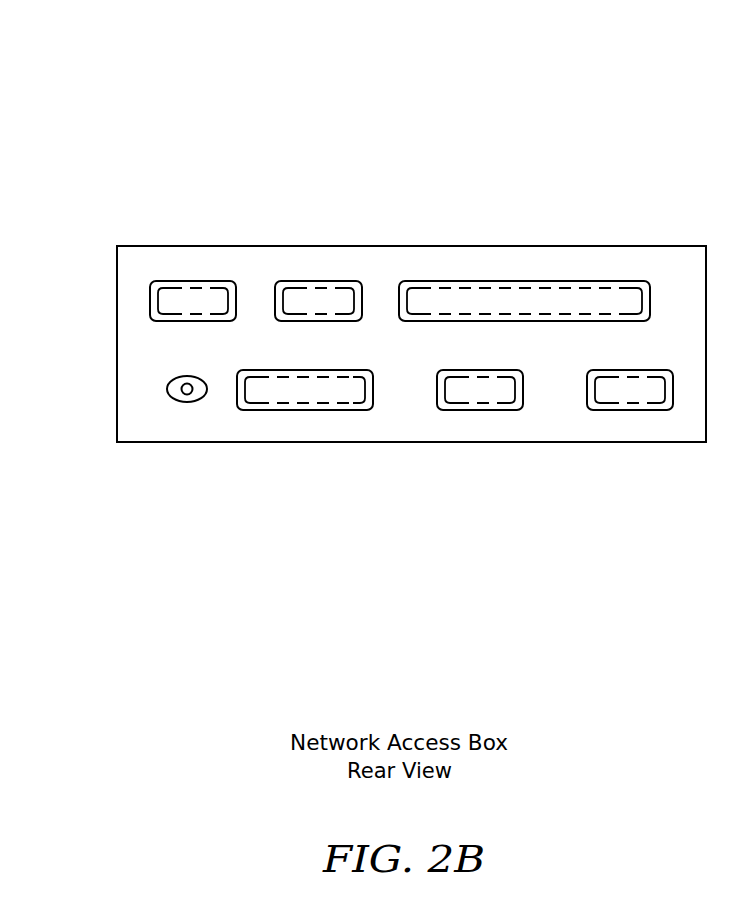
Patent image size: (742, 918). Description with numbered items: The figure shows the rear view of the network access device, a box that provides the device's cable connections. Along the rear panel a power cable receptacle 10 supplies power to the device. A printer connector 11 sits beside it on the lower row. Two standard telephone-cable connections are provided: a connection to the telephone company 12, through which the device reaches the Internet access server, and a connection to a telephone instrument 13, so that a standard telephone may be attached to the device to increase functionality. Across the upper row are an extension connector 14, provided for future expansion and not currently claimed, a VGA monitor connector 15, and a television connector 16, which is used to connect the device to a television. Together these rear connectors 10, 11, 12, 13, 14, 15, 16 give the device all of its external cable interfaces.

The Power Cable Receptacle 10 is at (185, 403).
The Printer Connector 11 is at (280, 411).
The To Telephone Company connector 12 is at (465, 411).
The To Telephone Instrument connector 13 is at (620, 411).
The Extension Connector 14 is at (517, 281).
The VGA Monitor Connector 15 is at (310, 281).
The Television Connector 16 is at (187, 281).